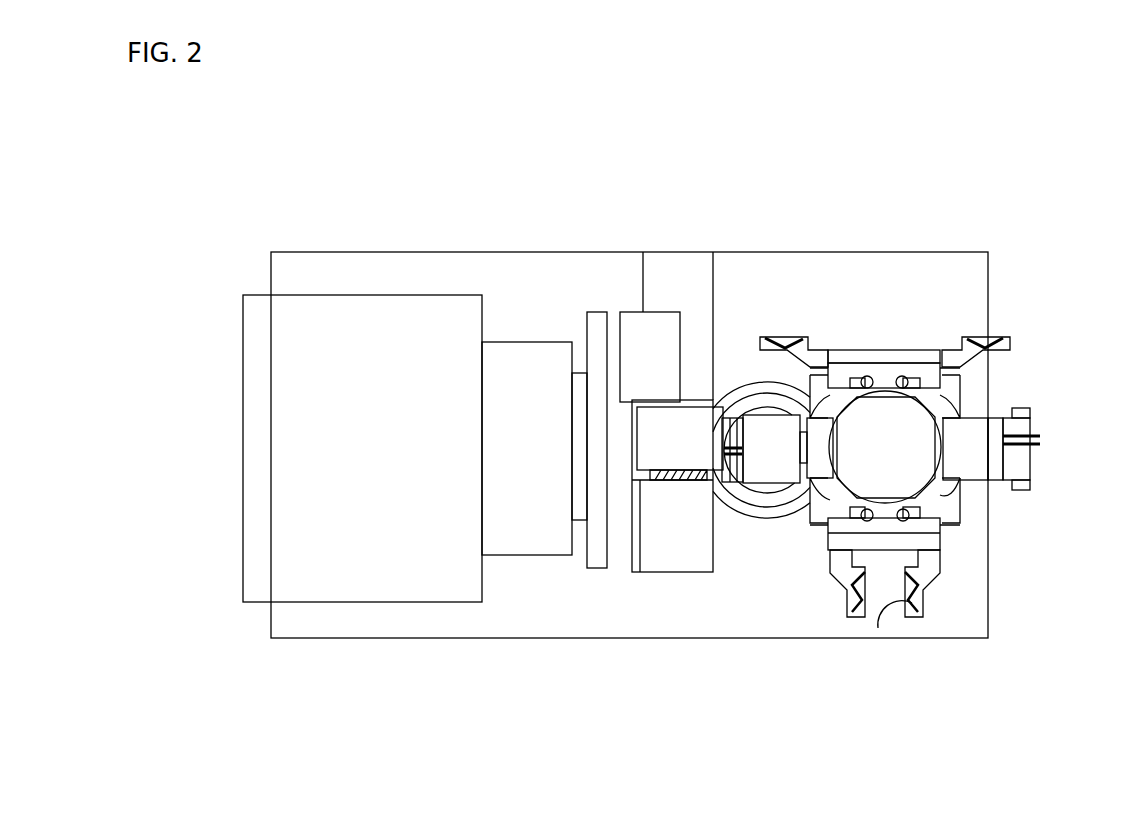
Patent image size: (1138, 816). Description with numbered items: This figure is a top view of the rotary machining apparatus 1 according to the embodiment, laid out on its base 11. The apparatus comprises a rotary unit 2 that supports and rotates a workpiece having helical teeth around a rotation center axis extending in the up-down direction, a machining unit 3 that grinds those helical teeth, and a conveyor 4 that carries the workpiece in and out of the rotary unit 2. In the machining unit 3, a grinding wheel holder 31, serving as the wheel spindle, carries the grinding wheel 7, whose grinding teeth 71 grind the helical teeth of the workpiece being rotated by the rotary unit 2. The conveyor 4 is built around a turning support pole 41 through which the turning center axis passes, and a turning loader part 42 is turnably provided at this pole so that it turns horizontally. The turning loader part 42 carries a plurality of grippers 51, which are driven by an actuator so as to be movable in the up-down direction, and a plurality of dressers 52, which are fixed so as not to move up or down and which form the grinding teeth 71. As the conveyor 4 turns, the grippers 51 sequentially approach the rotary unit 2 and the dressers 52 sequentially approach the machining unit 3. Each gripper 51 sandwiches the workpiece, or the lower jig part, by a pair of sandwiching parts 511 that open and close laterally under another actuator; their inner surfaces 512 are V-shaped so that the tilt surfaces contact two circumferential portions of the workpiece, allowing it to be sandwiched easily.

The rotary machining apparatus 1 is at (1010, 218).
The base 11 is at (975, 597).
The rotary unit 2 is at (790, 503).
The machining unit 3 is at (637, 373).
The grinding wheel holder 31 is at (693, 355).
The conveyor 4 is at (968, 407).
The turning support pole 41 is at (892, 452).
The turning loader part 42 is at (933, 499).
The grippers 51 is at (885, 472).
The sandwiching parts 511 is at (858, 610).
The inner surfaces 512 is at (883, 594).
The dressers 52 is at (727, 415).
The grinding wheel 7 is at (678, 445).
The grinding teeth 71 is at (742, 497).